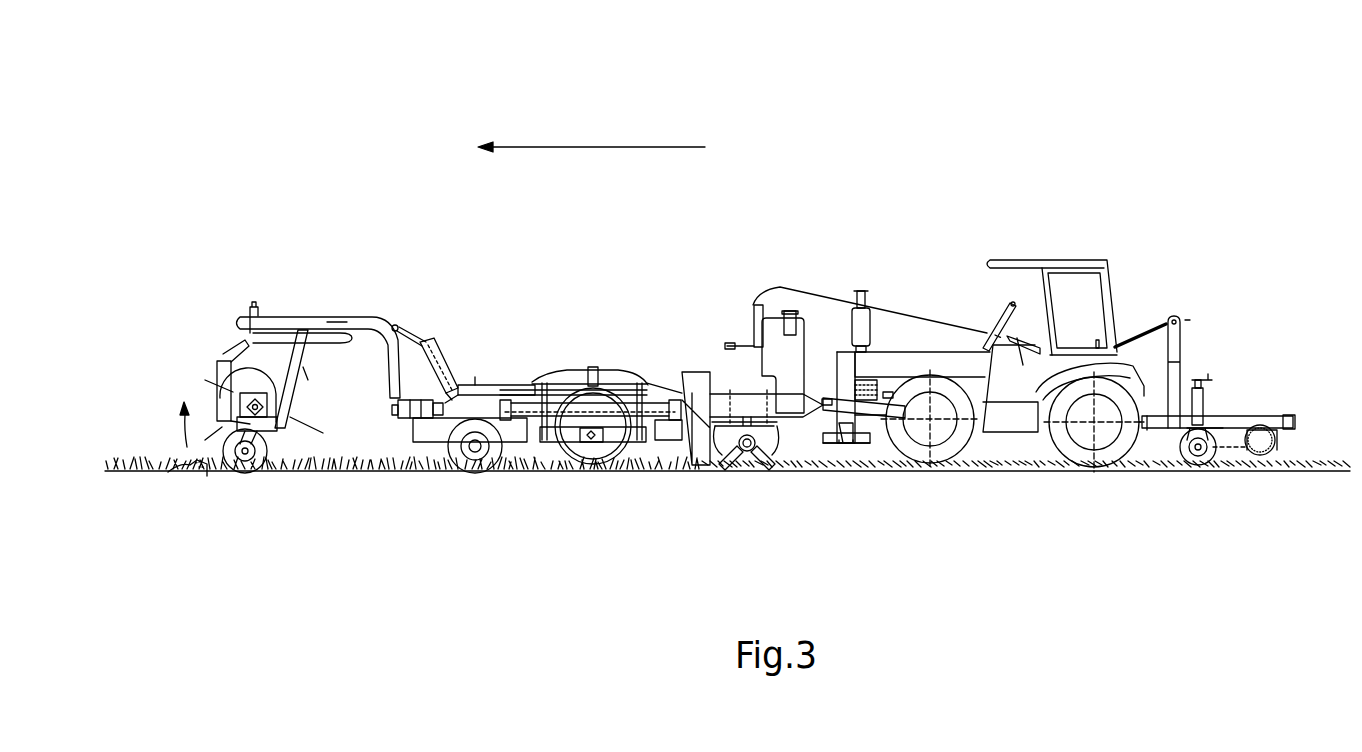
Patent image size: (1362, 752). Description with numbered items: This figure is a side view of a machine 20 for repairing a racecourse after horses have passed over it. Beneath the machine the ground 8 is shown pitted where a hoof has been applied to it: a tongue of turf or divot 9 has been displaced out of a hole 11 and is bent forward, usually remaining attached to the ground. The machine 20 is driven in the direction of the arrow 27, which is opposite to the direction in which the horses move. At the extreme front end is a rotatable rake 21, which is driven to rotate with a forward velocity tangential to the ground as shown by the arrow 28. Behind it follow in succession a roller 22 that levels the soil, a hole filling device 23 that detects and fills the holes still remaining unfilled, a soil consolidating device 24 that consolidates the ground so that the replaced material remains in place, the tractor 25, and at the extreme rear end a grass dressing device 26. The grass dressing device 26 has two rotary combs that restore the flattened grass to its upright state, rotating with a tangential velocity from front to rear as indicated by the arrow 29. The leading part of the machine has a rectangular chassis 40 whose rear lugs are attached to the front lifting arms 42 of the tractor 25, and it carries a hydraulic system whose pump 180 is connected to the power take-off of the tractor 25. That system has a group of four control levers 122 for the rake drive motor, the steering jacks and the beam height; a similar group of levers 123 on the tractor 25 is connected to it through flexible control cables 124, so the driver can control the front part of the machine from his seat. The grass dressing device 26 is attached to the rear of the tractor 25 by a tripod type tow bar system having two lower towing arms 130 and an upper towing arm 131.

The ground 8 is at (134, 476).
The divot 9 is at (207, 474).
The hole 11 is at (197, 466).
The machine 20 is at (1187, 209).
The rotatable rake 21 is at (278, 402).
The roller 22 is at (592, 453).
The hole filling device 23 is at (694, 360).
The soil consolidating device 24 is at (750, 478).
The tractor 25 is at (932, 291).
The grass dressing device 26 is at (1223, 350).
The arrow 27 is at (573, 147).
The arrow 28 is at (190, 447).
The arrow 29 is at (1247, 407).
The rectangular chassis 40 is at (422, 468).
The front lifting arms 42 is at (860, 447).
The group of control levers 122 is at (758, 317).
The group of levers 123 is at (996, 303).
The flexible control cables 124 is at (803, 287).
The lower towing arms 130 is at (1150, 462).
The upper towing arm 131 is at (1138, 327).
The pump 180 is at (830, 468).